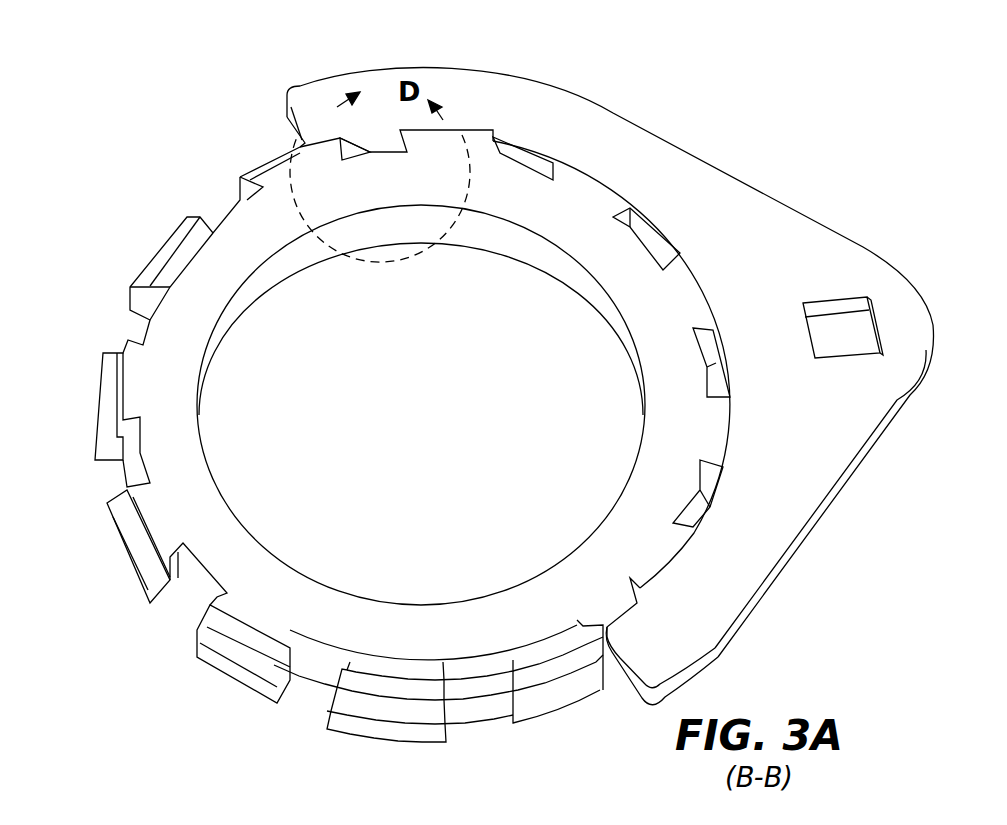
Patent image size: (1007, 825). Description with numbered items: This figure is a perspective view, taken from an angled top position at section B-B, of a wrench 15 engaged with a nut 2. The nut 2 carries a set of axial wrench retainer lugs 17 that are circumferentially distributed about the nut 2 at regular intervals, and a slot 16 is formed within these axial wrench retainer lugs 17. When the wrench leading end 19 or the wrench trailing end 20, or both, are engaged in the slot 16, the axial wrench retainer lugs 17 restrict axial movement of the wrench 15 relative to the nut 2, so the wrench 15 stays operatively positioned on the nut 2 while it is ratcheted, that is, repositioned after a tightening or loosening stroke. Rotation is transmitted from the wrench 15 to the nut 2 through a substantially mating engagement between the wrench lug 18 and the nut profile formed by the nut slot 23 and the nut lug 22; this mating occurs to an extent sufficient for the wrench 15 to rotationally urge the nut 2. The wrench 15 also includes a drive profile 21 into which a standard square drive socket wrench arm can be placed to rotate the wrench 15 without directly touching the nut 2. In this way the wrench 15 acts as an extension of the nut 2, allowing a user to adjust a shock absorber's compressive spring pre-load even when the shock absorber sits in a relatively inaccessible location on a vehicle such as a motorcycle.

The nut 2 is at (220, 567).
The wrench 15 is at (720, 207).
The slot 16 is at (112, 349).
The axial wrench retainer lugs 17 is at (177, 232).
The wrench lug 18 is at (383, 150).
The wrench leading end 19 is at (306, 125).
The wrench trailing end 20 is at (703, 610).
The drive profile 21 is at (840, 332).
The nut lug 22 is at (220, 665).
The nut slot 23 is at (327, 643).